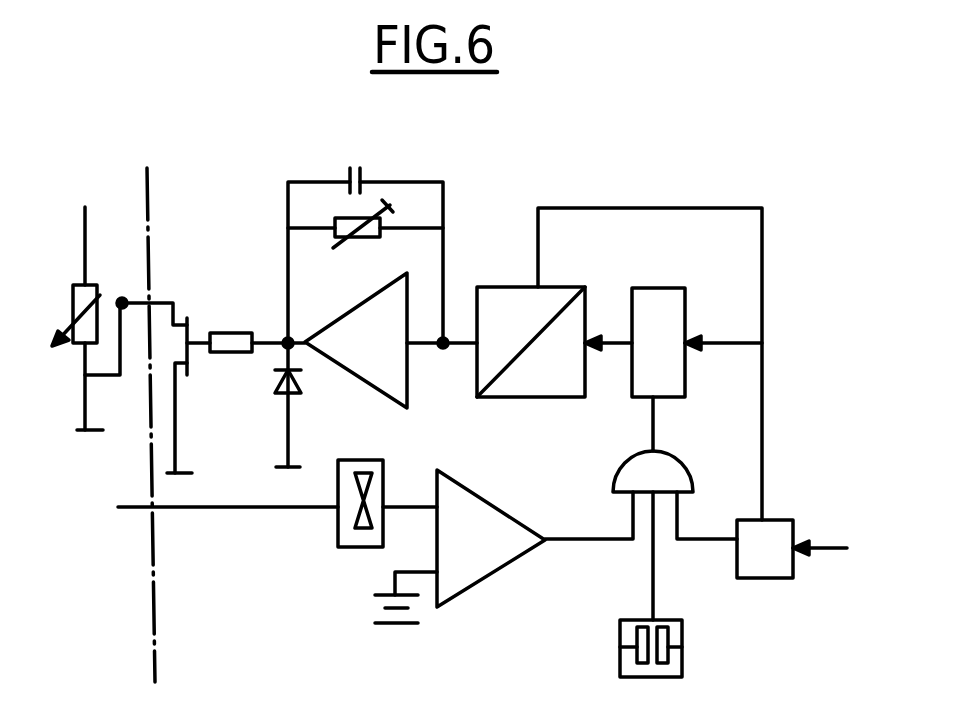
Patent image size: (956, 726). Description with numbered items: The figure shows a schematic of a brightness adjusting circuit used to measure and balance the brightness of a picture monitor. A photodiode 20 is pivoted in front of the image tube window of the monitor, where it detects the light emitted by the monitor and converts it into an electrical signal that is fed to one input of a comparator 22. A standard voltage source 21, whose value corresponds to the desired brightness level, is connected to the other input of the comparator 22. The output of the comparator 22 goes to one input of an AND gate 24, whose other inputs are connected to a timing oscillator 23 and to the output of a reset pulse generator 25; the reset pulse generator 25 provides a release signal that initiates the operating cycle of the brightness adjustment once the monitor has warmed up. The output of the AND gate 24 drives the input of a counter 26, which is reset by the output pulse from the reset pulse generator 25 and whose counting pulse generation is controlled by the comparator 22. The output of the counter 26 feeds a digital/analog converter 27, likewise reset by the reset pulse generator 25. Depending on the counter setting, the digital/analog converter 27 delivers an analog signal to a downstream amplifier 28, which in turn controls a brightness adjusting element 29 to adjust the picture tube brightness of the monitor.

The photodiode 20 is at (350, 535).
The standard voltage source 21 is at (408, 627).
The comparator 22 is at (472, 575).
The timing oscillator 23 is at (672, 660).
The AND gate 24 is at (668, 470).
The reset pulse generator 25 is at (772, 538).
The counter 26 is at (673, 302).
The digital/analog converter 27 is at (512, 385).
The amplifier 28 is at (397, 388).
The brightness adjusting element 29 is at (90, 293).